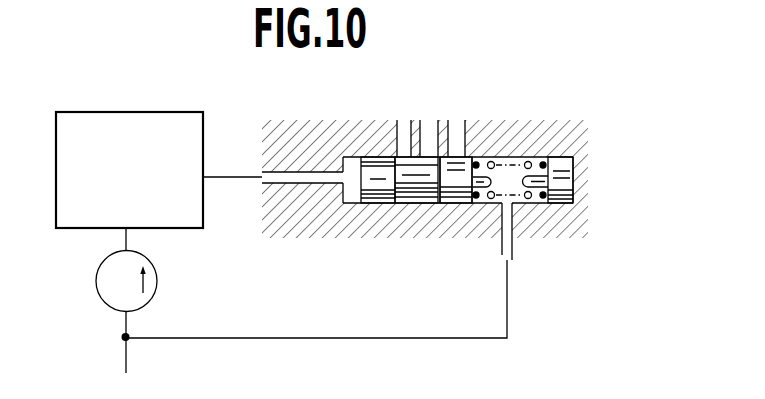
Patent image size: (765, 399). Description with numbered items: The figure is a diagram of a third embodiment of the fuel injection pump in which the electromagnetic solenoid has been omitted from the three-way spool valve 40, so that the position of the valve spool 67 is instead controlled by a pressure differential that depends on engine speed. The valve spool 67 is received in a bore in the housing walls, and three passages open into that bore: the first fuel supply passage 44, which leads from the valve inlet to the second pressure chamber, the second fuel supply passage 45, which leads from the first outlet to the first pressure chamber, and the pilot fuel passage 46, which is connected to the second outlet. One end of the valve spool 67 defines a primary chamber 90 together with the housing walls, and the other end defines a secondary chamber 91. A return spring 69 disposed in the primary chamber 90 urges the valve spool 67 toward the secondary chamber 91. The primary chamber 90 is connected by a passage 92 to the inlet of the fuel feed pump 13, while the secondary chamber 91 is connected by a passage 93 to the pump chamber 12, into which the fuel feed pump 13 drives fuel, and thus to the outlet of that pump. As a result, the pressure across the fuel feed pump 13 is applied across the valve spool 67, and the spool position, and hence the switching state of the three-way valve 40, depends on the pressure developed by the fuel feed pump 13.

The pump chamber 12 is at (168, 111).
The fuel feed pump 13 is at (157, 279).
The three-way spool valve 40 is at (612, 151).
The first fuel supply passage 44 is at (429, 133).
The second fuel supply passage 45 is at (457, 133).
The pilot fuel passage 46 is at (403, 133).
The valve spool 67 is at (458, 200).
The return spring 69 is at (530, 198).
The primary chamber 90 is at (516, 176).
The secondary chamber 91 is at (352, 200).
The passage 92 is at (500, 243).
The passage 93 is at (293, 184).